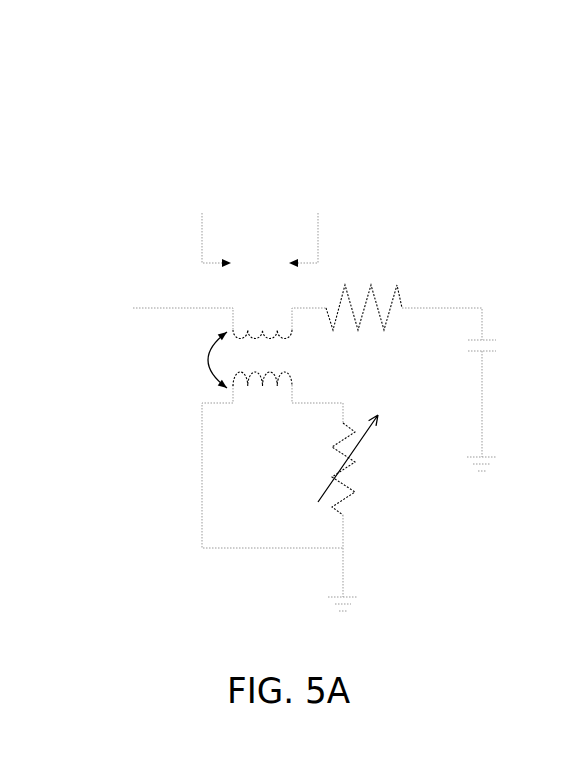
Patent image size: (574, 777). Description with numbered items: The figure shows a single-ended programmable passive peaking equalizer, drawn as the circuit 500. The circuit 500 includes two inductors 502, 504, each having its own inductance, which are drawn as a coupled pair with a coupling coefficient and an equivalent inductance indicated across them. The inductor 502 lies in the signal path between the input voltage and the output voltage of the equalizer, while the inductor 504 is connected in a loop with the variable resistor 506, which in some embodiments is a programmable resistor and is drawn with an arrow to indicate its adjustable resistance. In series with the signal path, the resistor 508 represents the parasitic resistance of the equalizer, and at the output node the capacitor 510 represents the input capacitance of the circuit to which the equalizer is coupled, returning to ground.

The circuit 500 is at (194, 140).
The inductor 502 is at (295, 323).
The inductor 504 is at (293, 378).
The variable resistor 506 is at (362, 503).
The resistor 508 is at (417, 284).
The capacitor 510 is at (503, 333).